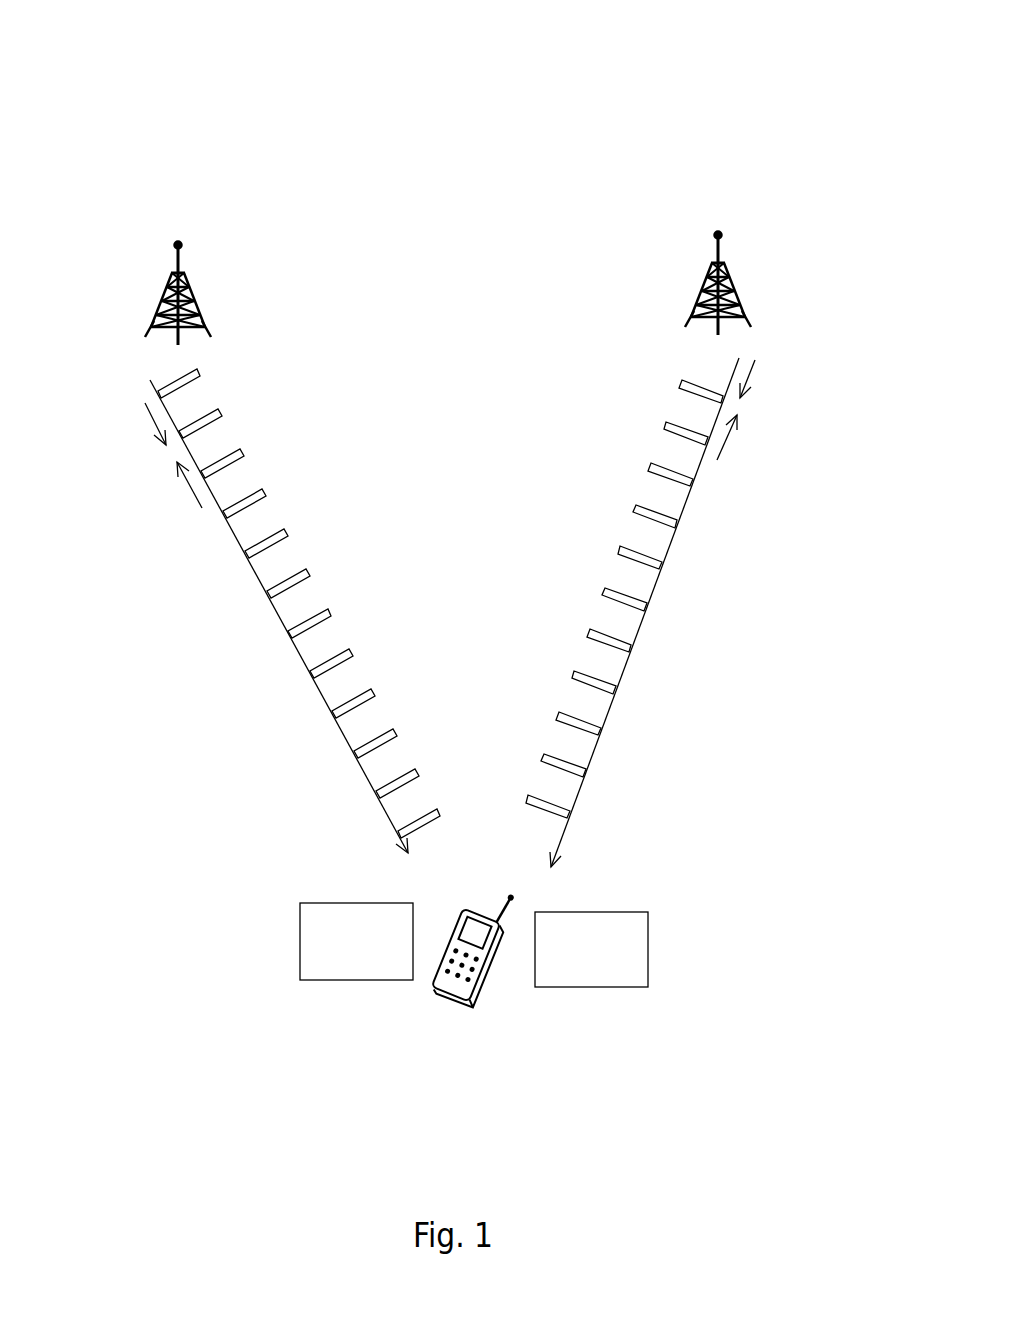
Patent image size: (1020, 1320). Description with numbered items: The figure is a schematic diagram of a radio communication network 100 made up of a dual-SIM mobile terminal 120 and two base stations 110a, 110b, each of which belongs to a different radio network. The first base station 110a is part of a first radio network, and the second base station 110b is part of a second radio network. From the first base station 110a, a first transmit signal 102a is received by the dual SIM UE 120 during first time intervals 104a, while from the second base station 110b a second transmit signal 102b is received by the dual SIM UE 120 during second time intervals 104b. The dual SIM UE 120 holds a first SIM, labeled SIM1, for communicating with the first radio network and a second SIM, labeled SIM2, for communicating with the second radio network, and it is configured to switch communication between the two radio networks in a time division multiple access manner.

The radio communication network 100 is at (374, 122).
The first base station 110a is at (175, 212).
The second base station 110b is at (713, 202).
The first transmit signal 102a is at (299, 686).
The second transmit signal 102b is at (640, 674).
The first time intervals 104a is at (158, 466).
The second time intervals 104b is at (760, 416).
The dual-SIM mobile terminal 120 is at (508, 993).